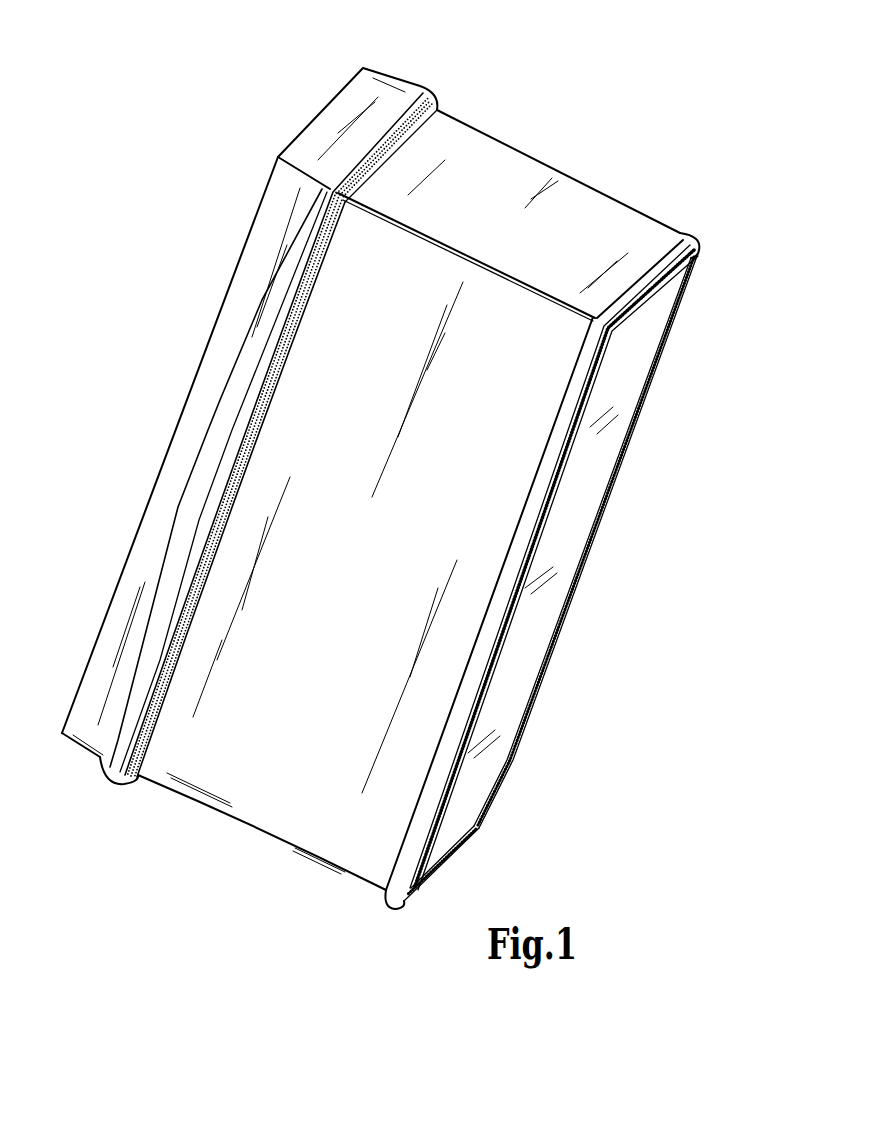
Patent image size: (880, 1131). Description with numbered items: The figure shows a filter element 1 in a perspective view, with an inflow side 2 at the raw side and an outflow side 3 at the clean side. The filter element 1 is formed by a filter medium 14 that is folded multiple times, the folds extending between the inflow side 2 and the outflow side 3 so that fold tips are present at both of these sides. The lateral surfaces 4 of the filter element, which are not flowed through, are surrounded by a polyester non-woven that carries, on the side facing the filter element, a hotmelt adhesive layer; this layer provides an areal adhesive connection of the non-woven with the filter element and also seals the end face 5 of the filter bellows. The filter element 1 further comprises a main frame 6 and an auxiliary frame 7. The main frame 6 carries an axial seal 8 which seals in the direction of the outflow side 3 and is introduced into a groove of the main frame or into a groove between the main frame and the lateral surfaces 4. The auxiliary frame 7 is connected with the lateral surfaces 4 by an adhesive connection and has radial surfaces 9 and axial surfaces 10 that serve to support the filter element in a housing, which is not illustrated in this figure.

The filter element 1 is at (606, 105).
The inflow side 2 is at (183, 382).
The outflow side 3 is at (571, 504).
The lateral surfaces 4 is at (511, 175).
The end face 5 is at (605, 235).
The main frame 6 is at (313, 110).
The auxiliary frame 7 is at (699, 220).
The axial seal 8 is at (128, 786).
The radial surfaces 9 is at (399, 878).
The axial surfaces 10 is at (479, 848).
The filter medium 14 is at (625, 370).